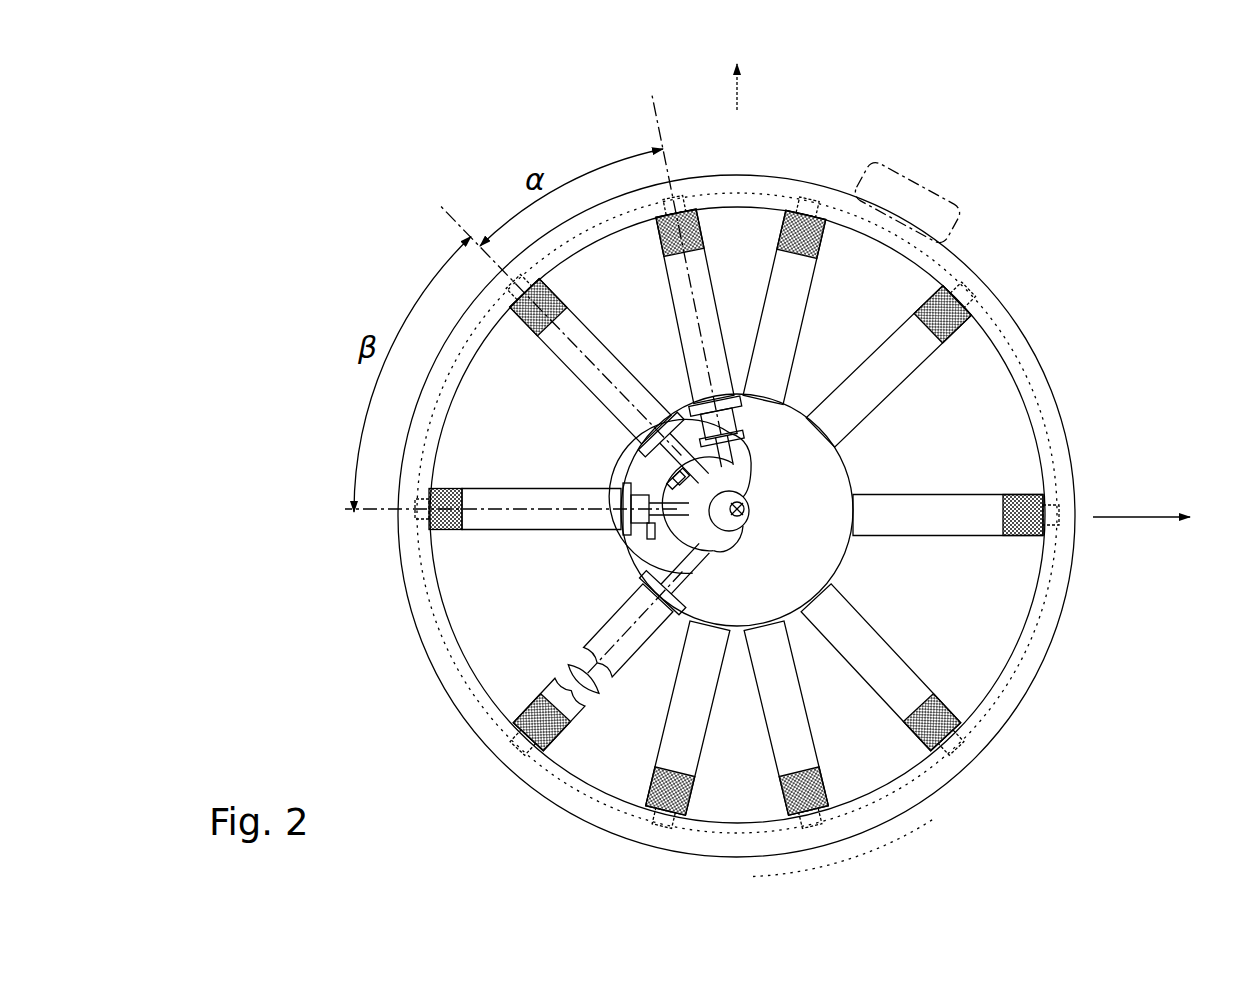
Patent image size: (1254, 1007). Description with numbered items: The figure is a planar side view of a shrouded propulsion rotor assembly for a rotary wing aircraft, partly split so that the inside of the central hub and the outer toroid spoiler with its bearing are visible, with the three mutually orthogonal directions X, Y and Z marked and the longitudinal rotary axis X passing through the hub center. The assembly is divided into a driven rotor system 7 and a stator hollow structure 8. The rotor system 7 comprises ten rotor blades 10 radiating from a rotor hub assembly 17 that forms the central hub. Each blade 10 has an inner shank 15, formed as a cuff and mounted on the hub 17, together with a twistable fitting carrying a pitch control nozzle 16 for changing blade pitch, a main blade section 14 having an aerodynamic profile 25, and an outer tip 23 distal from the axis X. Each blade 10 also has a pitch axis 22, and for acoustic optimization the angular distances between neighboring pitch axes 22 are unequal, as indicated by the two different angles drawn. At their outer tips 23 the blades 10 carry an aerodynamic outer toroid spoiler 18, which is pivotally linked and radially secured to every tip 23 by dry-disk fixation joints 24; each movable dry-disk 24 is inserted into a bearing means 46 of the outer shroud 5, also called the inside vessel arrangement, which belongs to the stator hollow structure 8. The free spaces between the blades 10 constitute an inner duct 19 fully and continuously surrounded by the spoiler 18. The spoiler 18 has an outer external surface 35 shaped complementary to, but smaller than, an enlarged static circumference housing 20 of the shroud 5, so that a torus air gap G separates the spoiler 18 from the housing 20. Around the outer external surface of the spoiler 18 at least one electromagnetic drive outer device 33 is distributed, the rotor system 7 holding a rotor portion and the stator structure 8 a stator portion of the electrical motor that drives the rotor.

The outer shroud 5 is at (795, 516).
The driven rotor system 7 is at (815, 516).
The stator hollow structure 8 is at (1062, 821).
The rotor blade 10 is at (775, 511).
The main blade section 14 is at (528, 511).
The inner shank 15 is at (604, 475).
The pitch control nozzle 16 is at (568, 483).
The rotor hub assembly 17 is at (731, 539).
The aerodynamic outer toroid spoiler 18 is at (783, 515).
The inner duct 19 is at (1064, 707).
The static circumference housing 20 is at (863, 850).
The pitch axis 22 is at (550, 349).
The outer tip 23 is at (485, 551).
The dry-disk fixation joint 24 is at (398, 555).
The aerodynamic profile 25 is at (580, 771).
The electromagnetic drive outer device 33 is at (912, 176).
The outer external surface 35 is at (568, 706).
The bearing means 46 is at (707, 513).
The longitudinal rotary axis X is at (782, 510).
The direction Y is at (1141, 561).
The direction Z is at (706, 87).
The torus air gap G is at (691, 882).